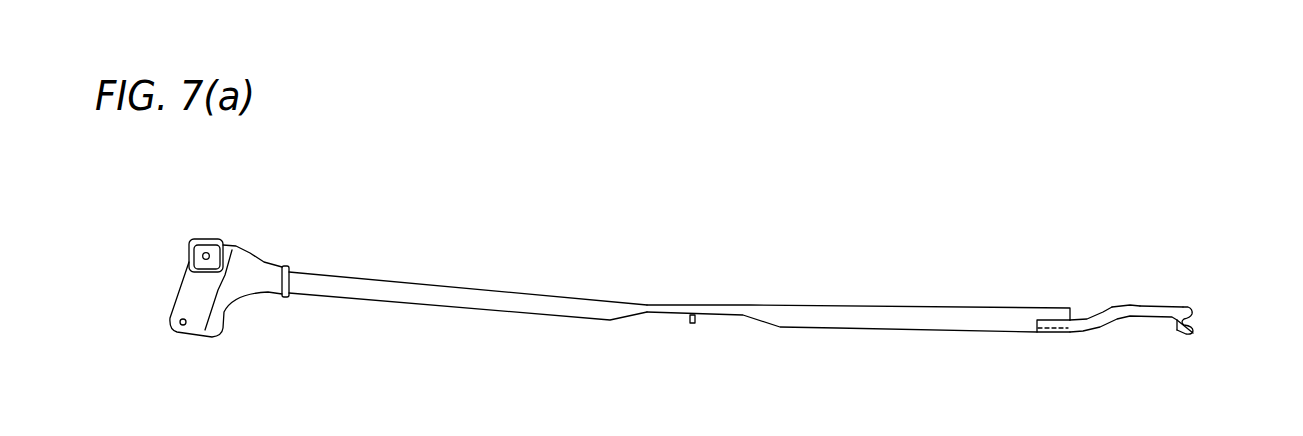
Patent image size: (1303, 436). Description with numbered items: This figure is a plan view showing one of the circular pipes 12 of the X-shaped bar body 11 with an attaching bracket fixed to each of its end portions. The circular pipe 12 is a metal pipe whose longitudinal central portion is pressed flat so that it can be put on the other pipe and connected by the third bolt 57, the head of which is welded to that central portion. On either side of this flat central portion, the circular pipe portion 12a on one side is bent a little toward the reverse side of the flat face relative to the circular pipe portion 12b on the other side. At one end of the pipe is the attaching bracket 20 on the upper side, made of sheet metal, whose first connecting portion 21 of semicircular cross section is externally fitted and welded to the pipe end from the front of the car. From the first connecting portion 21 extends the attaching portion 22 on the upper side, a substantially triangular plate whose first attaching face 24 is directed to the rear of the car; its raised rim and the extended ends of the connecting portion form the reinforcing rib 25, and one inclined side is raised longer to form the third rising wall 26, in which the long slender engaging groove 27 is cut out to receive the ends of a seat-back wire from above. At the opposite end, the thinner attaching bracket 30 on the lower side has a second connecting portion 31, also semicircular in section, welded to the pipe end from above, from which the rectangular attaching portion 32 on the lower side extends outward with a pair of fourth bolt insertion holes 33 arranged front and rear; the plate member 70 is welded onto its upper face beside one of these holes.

The bar body 11 is at (679, 251).
The circular pipe 12 is at (679, 251).
The circular pipe portion on one side 12a is at (507, 300).
The circular pipe portion on another side 12b is at (876, 317).
The attaching bracket on the upper side 20 is at (1145, 278).
The first connecting portion 21 is at (1057, 332).
The attaching portion on the upper side 22 is at (1110, 323).
The first attaching face 24 is at (1147, 307).
The reinforcing rib 25 is at (1127, 307).
The third rising wall 26 is at (1175, 327).
The engaging groove 27 is at (1193, 327).
The attaching bracket on the lower side 30 is at (199, 281).
The second connecting portion 31 is at (270, 288).
The attaching portion on the lower side 32 is at (192, 283).
The fourth bolt insertion holes 33 is at (206, 252).
The third bolt 57 is at (695, 323).
The plate member 70 is at (195, 243).